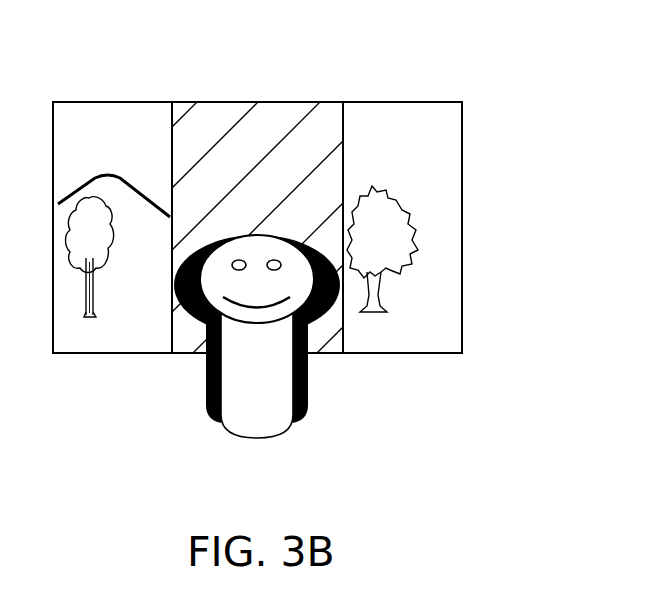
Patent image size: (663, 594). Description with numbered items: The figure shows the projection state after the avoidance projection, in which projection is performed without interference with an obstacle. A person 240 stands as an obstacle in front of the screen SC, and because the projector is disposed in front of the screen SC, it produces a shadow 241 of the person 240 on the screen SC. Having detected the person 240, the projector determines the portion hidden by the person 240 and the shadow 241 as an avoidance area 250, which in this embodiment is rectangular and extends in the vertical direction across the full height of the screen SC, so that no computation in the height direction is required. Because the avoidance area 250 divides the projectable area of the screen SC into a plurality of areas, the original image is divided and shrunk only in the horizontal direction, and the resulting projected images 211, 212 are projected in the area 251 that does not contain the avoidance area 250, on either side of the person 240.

The screen SC is at (462, 152).
The area 251 is at (112, 102).
The avoidance area 250 is at (257, 110).
The projected image 212 is at (90, 338).
The projected image 211 is at (450, 291).
The person 240 is at (259, 366).
The shadow 241 is at (206, 390).